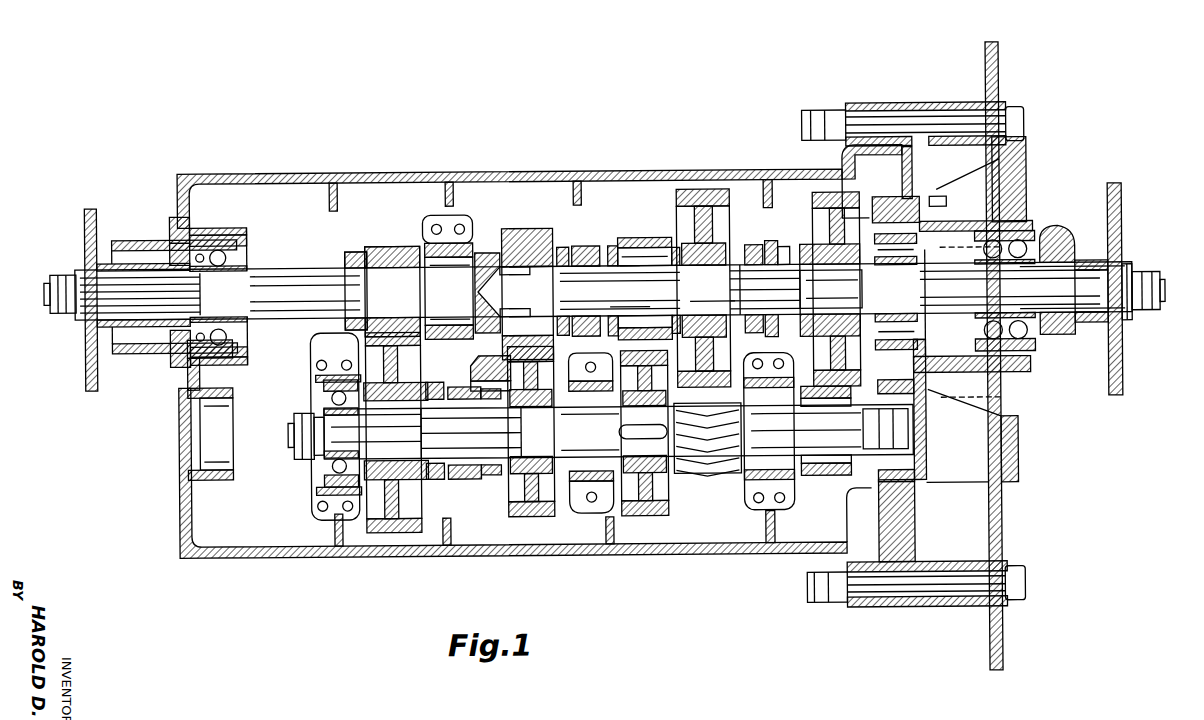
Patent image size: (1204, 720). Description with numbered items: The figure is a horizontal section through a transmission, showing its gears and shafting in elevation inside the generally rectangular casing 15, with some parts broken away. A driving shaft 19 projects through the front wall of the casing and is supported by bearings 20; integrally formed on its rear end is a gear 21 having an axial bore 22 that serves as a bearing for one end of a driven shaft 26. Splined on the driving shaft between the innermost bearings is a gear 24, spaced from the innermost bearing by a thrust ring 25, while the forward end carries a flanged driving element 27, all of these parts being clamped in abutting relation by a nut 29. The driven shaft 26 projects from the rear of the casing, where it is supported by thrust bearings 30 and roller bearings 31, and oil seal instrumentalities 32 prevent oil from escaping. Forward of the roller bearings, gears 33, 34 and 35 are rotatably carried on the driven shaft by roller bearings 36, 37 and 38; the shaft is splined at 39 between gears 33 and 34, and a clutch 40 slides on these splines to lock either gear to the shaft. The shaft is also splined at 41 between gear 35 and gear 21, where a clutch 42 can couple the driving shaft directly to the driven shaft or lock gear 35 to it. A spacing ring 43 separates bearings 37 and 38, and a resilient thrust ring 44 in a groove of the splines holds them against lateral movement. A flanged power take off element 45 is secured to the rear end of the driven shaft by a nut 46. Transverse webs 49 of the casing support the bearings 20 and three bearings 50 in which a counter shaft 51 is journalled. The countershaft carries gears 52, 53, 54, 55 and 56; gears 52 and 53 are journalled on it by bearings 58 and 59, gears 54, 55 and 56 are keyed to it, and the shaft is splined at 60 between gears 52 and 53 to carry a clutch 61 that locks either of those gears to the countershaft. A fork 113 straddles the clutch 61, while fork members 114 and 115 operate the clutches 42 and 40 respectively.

The casing 15 is at (575, 180).
The driving shaft 19 is at (55, 298).
The bearings 20 is at (300, 245).
The gear 21 is at (517, 230).
The axial bore 22 is at (505, 262).
The gear 24 is at (372, 250).
The thrust ring 25 is at (385, 245).
The driven shaft 26 is at (175, 240).
The flanged driving element 27 is at (85, 238).
The nut 29 is at (62, 271).
The thrust bearings 30 is at (1005, 234).
The roller bearings 31 is at (888, 236).
The oil seal instrumentalities 32 is at (1075, 244).
The gear 33 is at (848, 194).
The gear 34 is at (728, 212).
The gear 35 is at (640, 238).
The roller bearing 36 is at (815, 270).
The roller bearing 37 is at (688, 270).
The roller bearing 38 is at (635, 270).
The splined portion 39 is at (735, 302).
The clutch 40 is at (778, 248).
The splined portion 41 is at (625, 305).
The clutch 42 is at (585, 246).
The spacing ring 43 is at (676, 248).
The resilient thrust ring 44 is at (613, 246).
The flanged power take off element 45 is at (1122, 217).
The nut 46 is at (1158, 276).
The transverse webs 49 is at (470, 181).
The bearings 50 is at (310, 500).
The counter shaft 51 is at (296, 435).
The gear 52 is at (380, 520).
The gear 53 is at (525, 516).
The gear 54 is at (663, 516).
The gear 55 is at (718, 474).
The gear 56 is at (830, 478).
The bearing 58 is at (345, 385).
The bearing 59 is at (512, 372).
The splined portion 60 is at (525, 420).
The clutch 61 is at (470, 478).
The fork 113 is at (440, 478).
The fork member 114 is at (563, 247).
The fork member 115 is at (766, 246).